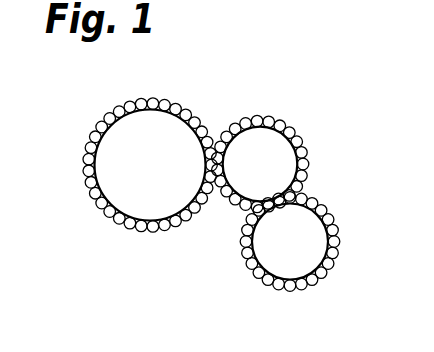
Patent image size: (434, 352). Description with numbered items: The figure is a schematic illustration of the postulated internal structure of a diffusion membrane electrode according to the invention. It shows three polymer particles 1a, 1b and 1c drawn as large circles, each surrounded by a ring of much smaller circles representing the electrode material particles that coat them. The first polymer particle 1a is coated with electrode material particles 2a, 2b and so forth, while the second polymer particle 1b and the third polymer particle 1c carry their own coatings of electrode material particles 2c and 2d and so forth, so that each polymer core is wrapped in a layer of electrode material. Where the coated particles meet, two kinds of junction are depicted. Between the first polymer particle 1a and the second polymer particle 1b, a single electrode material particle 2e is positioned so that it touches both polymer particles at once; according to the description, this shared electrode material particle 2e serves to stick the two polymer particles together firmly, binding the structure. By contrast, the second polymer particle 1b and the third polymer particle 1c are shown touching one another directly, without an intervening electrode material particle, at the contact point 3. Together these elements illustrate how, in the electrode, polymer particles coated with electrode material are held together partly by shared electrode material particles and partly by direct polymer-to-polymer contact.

The polymer particle 1a is at (123, 205).
The polymer particle 1b is at (283, 143).
The polymer particle 1c is at (315, 222).
The electrode material particle 2a is at (112, 107).
The electrode material particle 2b is at (120, 107).
The electrode material particle 2c is at (272, 120).
The electrode material particle 2d is at (300, 285).
The electrode material particle 2e is at (213, 165).
The contact point 3 is at (268, 209).